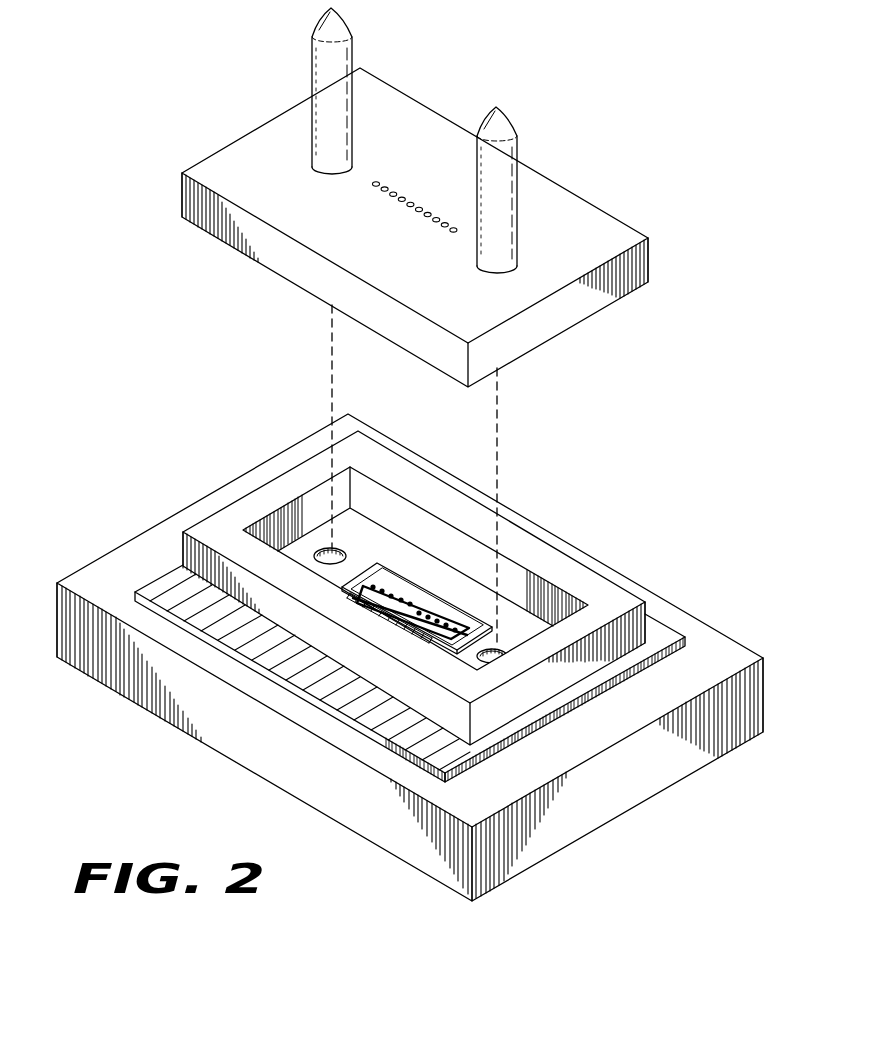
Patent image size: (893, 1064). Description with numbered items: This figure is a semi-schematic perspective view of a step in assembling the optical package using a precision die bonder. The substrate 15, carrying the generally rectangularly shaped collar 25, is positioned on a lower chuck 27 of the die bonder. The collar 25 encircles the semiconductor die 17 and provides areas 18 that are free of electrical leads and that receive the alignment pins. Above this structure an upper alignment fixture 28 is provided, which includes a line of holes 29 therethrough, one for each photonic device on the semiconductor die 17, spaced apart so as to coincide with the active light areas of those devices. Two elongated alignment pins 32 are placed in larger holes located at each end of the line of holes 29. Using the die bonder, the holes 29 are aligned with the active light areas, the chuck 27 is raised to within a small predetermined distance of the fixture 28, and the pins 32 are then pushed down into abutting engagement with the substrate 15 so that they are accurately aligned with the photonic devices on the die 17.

The substrate 15 is at (662, 632).
The semiconductor die 17 is at (397, 593).
The areas 18 is at (330, 548).
The collar 25 is at (560, 560).
The lower chuck 27 is at (140, 548).
The upper alignment fixture 28 is at (585, 220).
The holes 29 is at (381, 187).
The alignment pin 32 is at (312, 67).